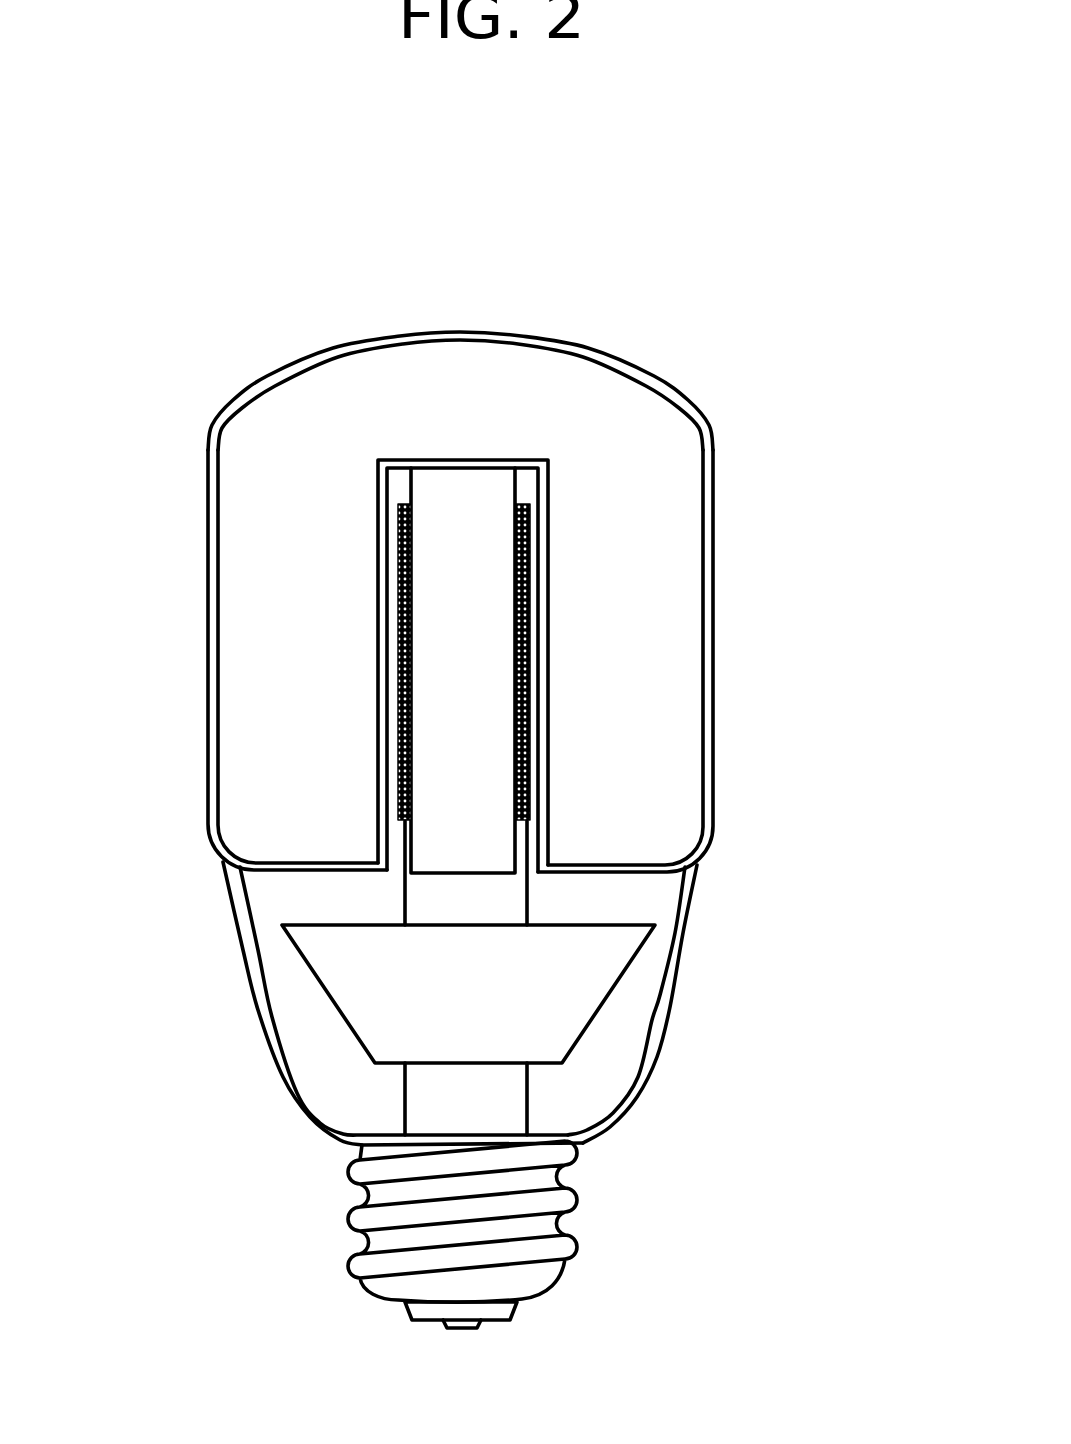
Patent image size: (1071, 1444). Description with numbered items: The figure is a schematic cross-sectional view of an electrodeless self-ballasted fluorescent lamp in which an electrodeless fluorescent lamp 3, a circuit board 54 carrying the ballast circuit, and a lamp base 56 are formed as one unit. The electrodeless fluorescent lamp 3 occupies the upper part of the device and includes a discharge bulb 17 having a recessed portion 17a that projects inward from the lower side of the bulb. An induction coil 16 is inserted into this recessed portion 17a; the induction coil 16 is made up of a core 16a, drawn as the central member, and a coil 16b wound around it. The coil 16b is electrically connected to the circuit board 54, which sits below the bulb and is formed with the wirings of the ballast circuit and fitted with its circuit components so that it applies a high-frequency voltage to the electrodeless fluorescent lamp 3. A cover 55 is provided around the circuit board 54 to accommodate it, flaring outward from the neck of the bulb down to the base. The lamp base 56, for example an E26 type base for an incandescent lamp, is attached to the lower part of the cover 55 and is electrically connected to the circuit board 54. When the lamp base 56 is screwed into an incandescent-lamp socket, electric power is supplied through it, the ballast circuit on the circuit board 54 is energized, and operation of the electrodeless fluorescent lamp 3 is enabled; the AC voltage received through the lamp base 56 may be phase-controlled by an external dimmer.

The electrodeless fluorescent lamp 3 is at (725, 432).
The induction coil 16 is at (547, 457).
The core 16a is at (462, 503).
The coil 16b is at (533, 627).
The discharge bulb 17 is at (707, 655).
The recessed portion 17a is at (396, 696).
The circuit board 54 is at (535, 1001).
The cover 55 is at (230, 907).
The lamp base 56 is at (537, 1252).